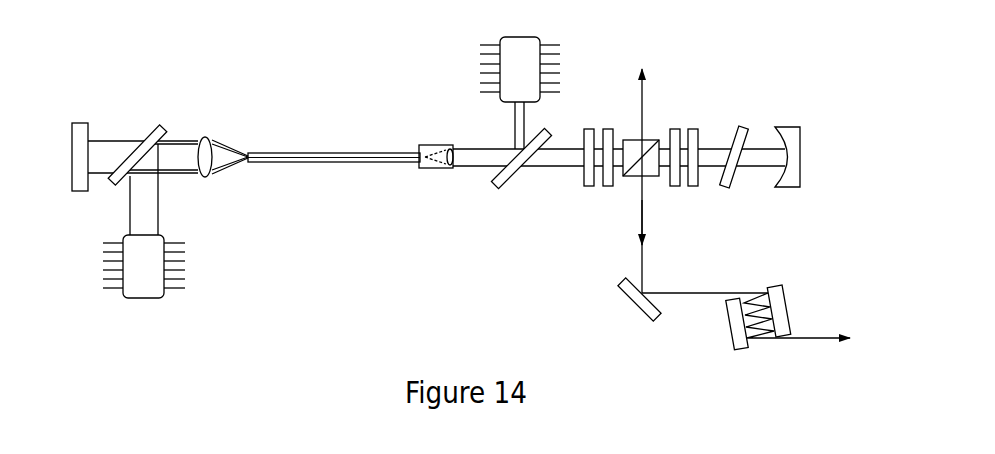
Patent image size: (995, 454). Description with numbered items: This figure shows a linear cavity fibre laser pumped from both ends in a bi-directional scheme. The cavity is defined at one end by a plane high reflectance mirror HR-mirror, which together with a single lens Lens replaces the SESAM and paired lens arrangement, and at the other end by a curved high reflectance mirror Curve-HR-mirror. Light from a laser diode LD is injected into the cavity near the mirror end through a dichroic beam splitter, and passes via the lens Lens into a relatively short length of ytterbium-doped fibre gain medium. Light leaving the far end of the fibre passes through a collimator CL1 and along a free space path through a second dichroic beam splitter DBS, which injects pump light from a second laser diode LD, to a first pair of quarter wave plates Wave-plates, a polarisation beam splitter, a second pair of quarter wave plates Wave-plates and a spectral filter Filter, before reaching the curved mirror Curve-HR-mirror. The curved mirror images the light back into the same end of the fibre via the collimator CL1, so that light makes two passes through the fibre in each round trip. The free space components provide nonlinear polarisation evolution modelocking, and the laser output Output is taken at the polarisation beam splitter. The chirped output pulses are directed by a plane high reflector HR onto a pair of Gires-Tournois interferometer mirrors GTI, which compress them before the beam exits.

The high reflectance mirror HR-mirror is at (95, 141).
The laser diode LD is at (331, 167).
The lens Lens is at (222, 172).
The collimator CL1 is at (436, 171).
The beam splitter DBS is at (517, 171).
The quarter wave plates Wave-plates is at (588, 190).
The output Output is at (621, 167).
The filter Filter is at (742, 144).
The curved high reflectance mirror Curve-HR-mirror is at (827, 133).
The high reflectance mirror HR is at (627, 303).
The Gires-Tournois interferometer mirror GTI is at (787, 321).